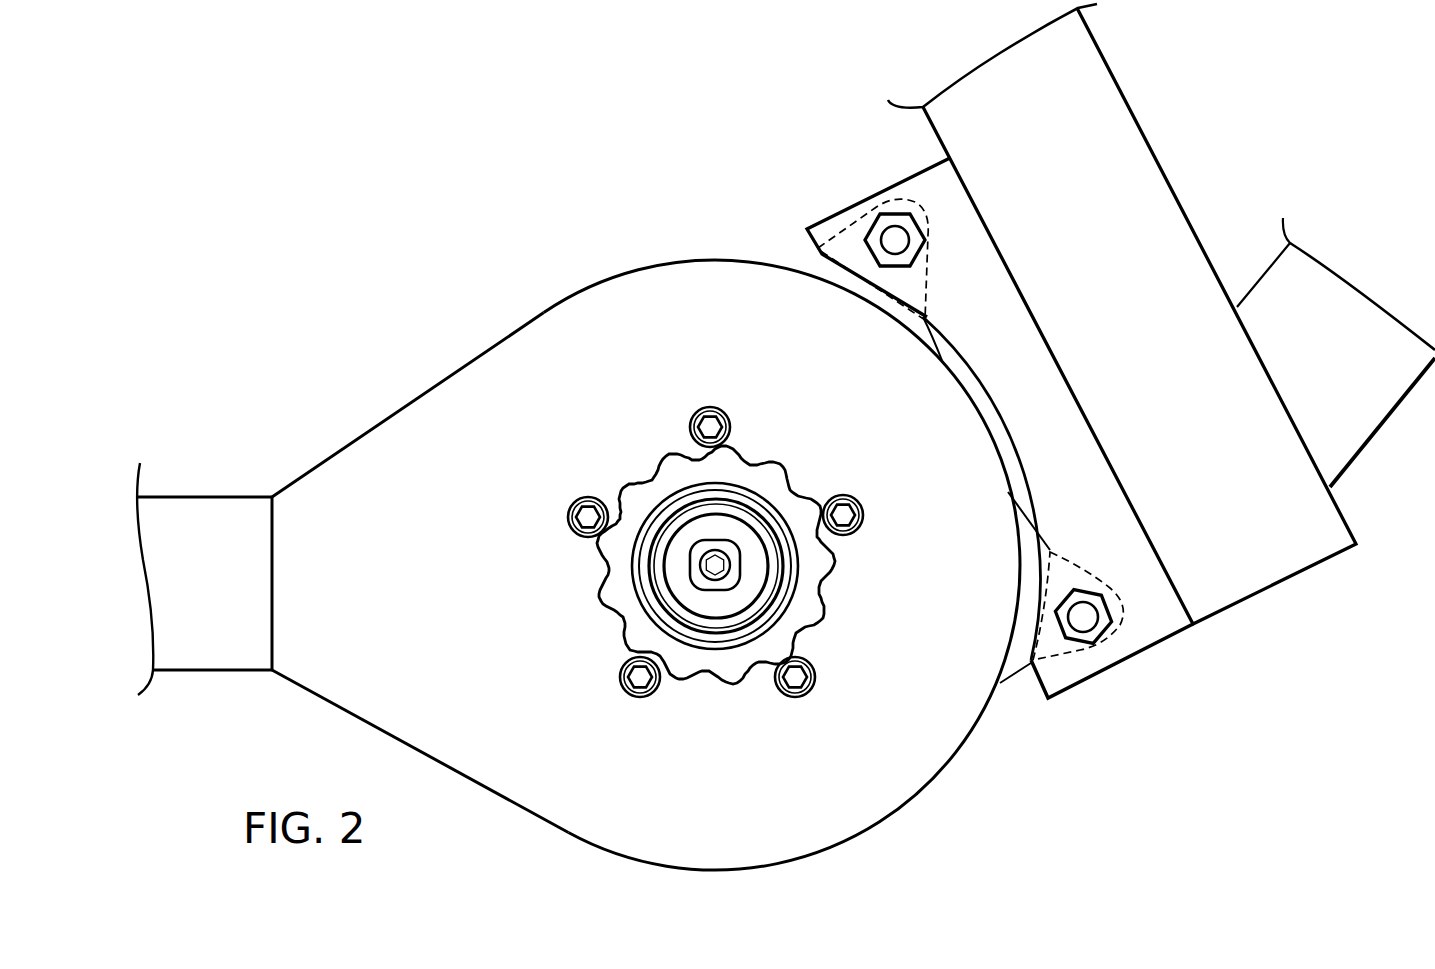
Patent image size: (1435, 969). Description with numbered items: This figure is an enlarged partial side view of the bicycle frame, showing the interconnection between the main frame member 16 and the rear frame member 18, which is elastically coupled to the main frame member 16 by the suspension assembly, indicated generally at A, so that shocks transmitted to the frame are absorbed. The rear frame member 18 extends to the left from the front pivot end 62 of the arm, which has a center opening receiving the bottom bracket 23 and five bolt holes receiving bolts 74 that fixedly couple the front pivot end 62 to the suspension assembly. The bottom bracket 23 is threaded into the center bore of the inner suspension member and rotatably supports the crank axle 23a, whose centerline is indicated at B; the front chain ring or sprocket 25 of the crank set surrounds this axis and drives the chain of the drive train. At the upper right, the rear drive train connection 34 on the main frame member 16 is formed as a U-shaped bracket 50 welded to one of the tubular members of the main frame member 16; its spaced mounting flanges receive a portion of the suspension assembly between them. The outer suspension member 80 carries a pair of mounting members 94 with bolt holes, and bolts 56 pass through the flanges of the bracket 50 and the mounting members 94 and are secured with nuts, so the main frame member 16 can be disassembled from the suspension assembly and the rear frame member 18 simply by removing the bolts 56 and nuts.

The main frame member 16 is at (1141, 121).
The rear frame member 18 is at (210, 489).
The bottom bracket 23 is at (724, 520).
The crank axle 23a is at (737, 565).
The front chain ring or sprocket 25 is at (830, 598).
The rear drive train connection 34 is at (794, 224).
The bracket 50 is at (880, 190).
The bolts 56 is at (928, 237).
The front pivot end 62 is at (558, 305).
The bolts 74 is at (698, 433).
The outer suspension member 80 is at (1003, 698).
The mounting members 94 is at (793, 253).
The assembly A is at (488, 165).
The axis B is at (708, 570).